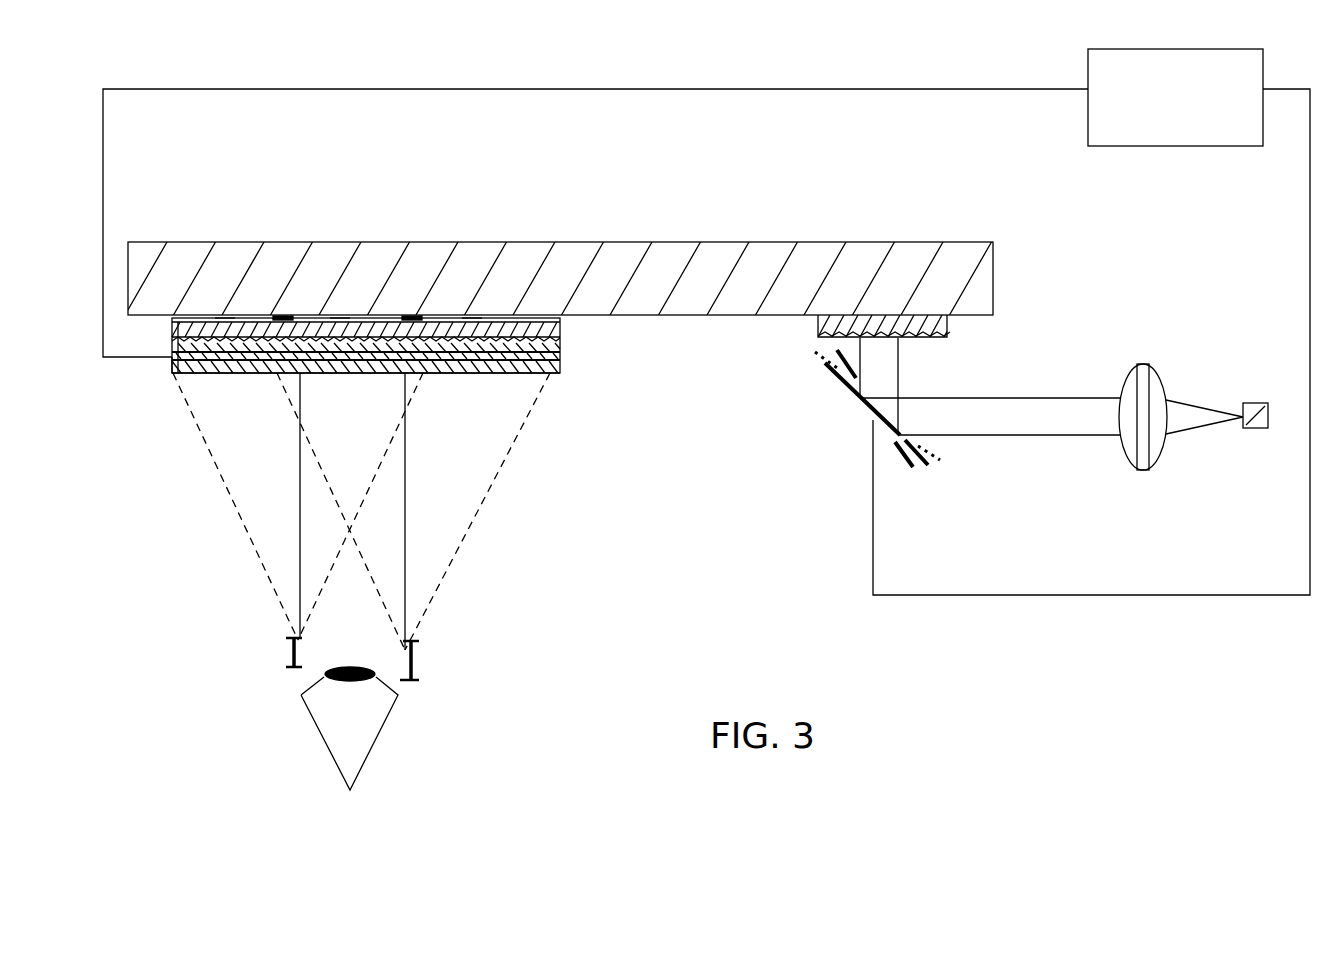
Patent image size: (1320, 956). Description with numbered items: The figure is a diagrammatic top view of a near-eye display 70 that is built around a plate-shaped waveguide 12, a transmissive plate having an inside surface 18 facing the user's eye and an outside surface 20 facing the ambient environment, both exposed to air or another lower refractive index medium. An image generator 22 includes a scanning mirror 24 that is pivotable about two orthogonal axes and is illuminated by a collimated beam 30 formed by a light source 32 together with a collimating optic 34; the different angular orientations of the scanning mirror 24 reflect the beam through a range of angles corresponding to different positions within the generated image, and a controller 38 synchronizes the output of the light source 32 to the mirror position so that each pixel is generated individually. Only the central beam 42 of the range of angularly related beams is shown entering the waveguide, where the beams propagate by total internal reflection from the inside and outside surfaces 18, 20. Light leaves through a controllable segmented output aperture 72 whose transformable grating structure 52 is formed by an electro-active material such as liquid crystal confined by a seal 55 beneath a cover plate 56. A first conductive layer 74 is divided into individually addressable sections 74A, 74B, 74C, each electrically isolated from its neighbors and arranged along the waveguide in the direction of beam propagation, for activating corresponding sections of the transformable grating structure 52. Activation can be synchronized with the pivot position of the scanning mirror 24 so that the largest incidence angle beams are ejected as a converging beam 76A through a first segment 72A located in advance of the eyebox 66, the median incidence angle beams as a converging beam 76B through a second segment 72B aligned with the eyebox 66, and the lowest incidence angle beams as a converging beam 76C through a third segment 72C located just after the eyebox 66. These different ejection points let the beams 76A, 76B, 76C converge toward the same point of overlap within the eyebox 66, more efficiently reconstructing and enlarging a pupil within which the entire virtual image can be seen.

The near-eye display 70 is at (577, 86).
The controller 38 is at (1196, 117).
The plate-shaped waveguide 12 is at (698, 236).
The inside surface 18 is at (718, 317).
The outside surface 20 is at (955, 243).
The image generator 22 is at (1138, 290).
The central beam 42 is at (912, 369).
The scanning mirror 24 is at (818, 382).
The collimated beam 30 is at (1035, 396).
The collimating optic 34 is at (1160, 380).
The light source 32 is at (1266, 444).
The controllable segmented output aperture 72 is at (514, 379).
The first segment 72A is at (463, 381).
The second segment 72B is at (368, 381).
The third segment 72C is at (226, 381).
The first conductive layer 74 is at (562, 322).
The addressable section 74A is at (470, 318).
The addressable section 74B is at (338, 318).
The addressable section 74C is at (222, 318).
The seal 55 is at (563, 344).
The transformable grating structure 52 is at (563, 369).
The cover plate 56 is at (172, 364).
The converging beam 76A is at (499, 460).
The converging beam 76B is at (412, 515).
The converging beam 76C is at (222, 492).
The eyebox 66 is at (407, 684).